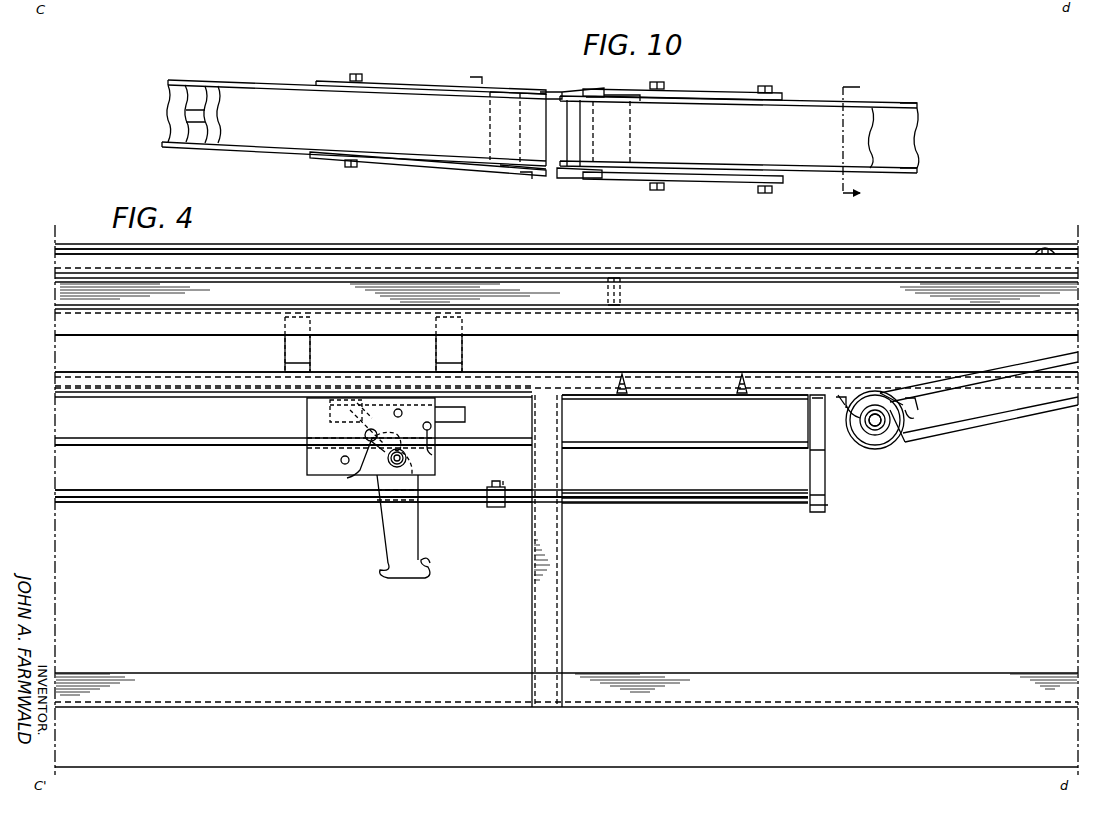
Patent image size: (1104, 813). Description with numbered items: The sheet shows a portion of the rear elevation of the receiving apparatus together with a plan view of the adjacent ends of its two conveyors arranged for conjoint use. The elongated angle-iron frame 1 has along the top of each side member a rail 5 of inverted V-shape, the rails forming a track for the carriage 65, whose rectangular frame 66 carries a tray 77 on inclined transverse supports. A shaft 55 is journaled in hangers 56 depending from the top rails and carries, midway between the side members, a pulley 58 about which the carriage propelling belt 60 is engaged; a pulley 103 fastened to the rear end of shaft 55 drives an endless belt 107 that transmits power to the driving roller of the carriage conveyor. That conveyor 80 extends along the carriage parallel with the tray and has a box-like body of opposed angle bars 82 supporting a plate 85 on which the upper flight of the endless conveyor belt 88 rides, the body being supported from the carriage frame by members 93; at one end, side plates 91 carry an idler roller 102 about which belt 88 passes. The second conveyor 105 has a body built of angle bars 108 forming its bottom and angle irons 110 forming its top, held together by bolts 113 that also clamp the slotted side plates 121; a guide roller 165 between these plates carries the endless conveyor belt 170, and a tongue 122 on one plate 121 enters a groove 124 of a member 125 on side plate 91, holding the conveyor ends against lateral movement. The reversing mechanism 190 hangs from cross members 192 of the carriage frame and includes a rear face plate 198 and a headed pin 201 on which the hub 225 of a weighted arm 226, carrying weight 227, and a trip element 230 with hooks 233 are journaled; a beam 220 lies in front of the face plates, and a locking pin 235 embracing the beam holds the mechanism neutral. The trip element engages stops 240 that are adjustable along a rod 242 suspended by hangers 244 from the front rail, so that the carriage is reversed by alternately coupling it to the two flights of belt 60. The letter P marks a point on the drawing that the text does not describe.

In FIG. 4, the frame 1 is at (700, 708).
In FIG. 4, the rail 5 is at (688, 386).
In FIG. 4, the shaft 55 is at (880, 425).
In FIG. 4, the hanger 56 is at (905, 403).
In FIG. 4, the pulley 58 is at (808, 426).
In FIG. 4, the carriage propelling belt 60 is at (655, 386).
In FIG. 4, the carriage 65 is at (165, 327).
In FIG. 4, the rectangular frame 66 is at (955, 328).
In FIG. 4, the tray 77 is at (62, 292).
In FIG. 10, the conveyor 80 is at (826, 100).
In FIG. 4, the conveyor 80 is at (975, 260).
In FIG. 10, the angle bar 82 is at (920, 103).
In FIG. 10, the plate 85 is at (908, 138).
In FIG. 10, the endless conveyor belt 88 is at (830, 163).
In FIG. 4, the endless conveyor belt 88 is at (855, 255).
In FIG. 10, the side plate 91 is at (718, 96).
In FIG. 4, the member 93 is at (622, 296).
In FIG. 10, the idler roller 102 is at (575, 176).
In FIG. 4, the pulley 103 is at (872, 440).
In FIG. 10, the second conveyor 105 is at (303, 83).
In FIG. 4, the endless belt 107 is at (1005, 414).
In FIG. 10, the angle bar 108 is at (173, 127).
In FIG. 10, the angle iron 110 is at (215, 90).
In FIG. 10, the bolt 113 is at (349, 168).
In FIG. 10, the side plate 121 is at (403, 83).
In FIG. 10, the tongue 122 is at (552, 87).
In FIG. 10, the groove 124 is at (566, 110).
In FIG. 10, the member 125 is at (608, 91).
In FIG. 10, the guide roller 165 is at (520, 178).
In FIG. 10, the endless conveyor belt 170 is at (280, 96).
In FIG. 4, the reversing mechanism 190 is at (305, 424).
In FIG. 4, the cross member 192 is at (290, 350).
In FIG. 4, the rear face plate 198 is at (318, 457).
In FIG. 4, the headed pin 201 is at (410, 468).
In FIG. 4, the beam 220 is at (466, 415).
In FIG. 4, the hub 225 is at (394, 429).
In FIG. 4, the arm 226 is at (362, 474).
In FIG. 4, the weight 227 is at (318, 404).
In FIG. 4, the trip element 230 is at (395, 527).
In FIG. 4, the hook 233 is at (380, 574).
In FIG. 4, the locking pin 235 is at (430, 449).
In FIG. 4, the stop 240 is at (510, 470).
In FIG. 4, the rod 242 is at (725, 505).
In FIG. 4, the hanger 244 is at (810, 459).
In FIG. 4, the pivot point P is at (770, 246).